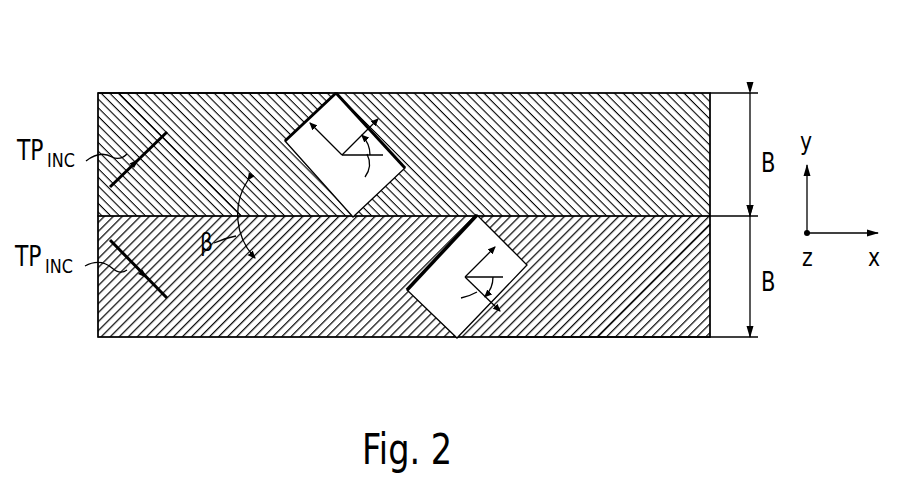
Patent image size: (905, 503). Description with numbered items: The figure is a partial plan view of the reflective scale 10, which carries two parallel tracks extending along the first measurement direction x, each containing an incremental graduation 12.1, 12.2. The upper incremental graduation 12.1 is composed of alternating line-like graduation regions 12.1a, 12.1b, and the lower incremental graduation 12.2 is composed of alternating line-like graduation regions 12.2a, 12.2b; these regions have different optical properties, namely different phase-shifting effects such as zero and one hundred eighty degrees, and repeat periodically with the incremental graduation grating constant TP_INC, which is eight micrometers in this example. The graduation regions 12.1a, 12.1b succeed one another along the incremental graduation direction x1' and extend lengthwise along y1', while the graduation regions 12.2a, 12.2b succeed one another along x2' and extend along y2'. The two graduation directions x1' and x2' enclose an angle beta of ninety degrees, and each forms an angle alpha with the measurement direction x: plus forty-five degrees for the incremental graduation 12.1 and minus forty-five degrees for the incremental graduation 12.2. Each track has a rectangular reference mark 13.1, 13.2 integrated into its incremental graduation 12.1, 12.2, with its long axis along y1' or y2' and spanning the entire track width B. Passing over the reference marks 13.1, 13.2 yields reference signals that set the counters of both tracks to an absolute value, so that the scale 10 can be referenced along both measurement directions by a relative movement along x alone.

The scale 10 is at (119, 359).
The incremental graduation 12.1 is at (272, 103).
The graduation region 12.1a is at (120, 112).
The graduation region 12.1b is at (133, 110).
The incremental graduation 12.2 is at (280, 337).
The graduation region 12.2a is at (647, 311).
The graduation region 12.2b is at (623, 330).
The reference mark 13.1 is at (342, 107).
The reference mark 13.2 is at (458, 320).